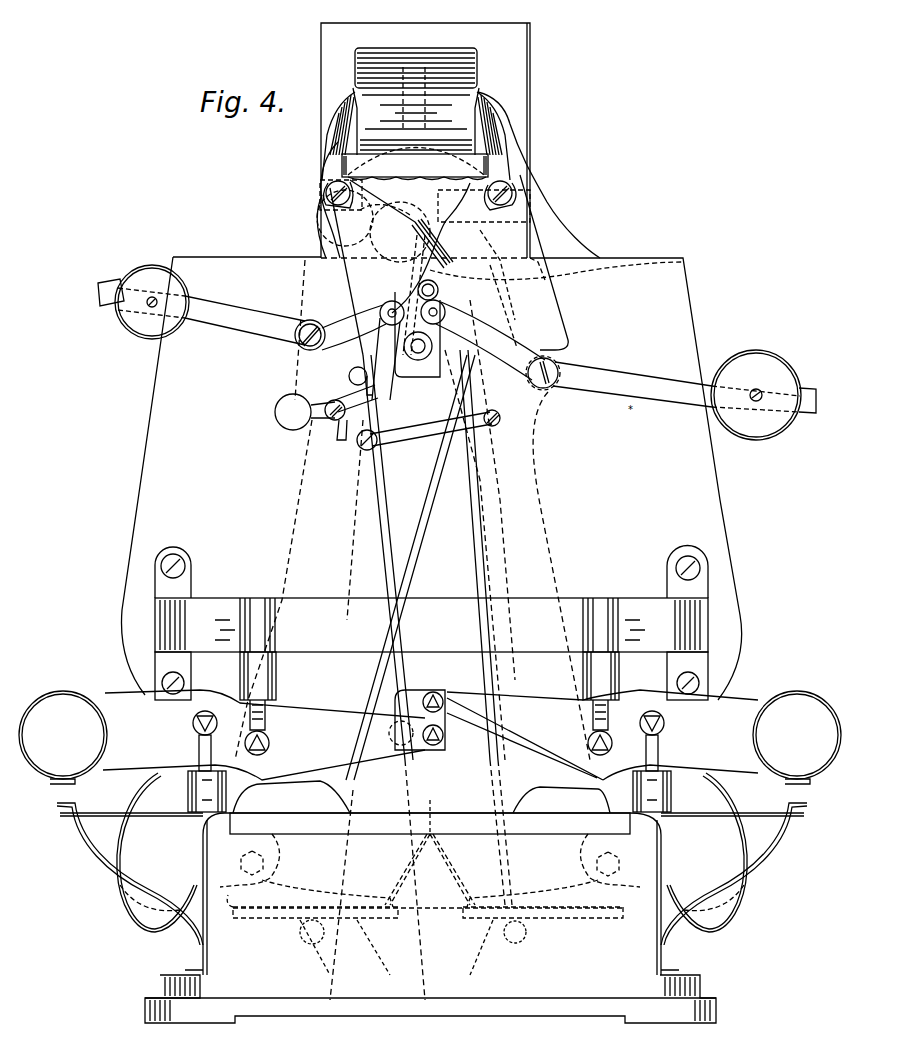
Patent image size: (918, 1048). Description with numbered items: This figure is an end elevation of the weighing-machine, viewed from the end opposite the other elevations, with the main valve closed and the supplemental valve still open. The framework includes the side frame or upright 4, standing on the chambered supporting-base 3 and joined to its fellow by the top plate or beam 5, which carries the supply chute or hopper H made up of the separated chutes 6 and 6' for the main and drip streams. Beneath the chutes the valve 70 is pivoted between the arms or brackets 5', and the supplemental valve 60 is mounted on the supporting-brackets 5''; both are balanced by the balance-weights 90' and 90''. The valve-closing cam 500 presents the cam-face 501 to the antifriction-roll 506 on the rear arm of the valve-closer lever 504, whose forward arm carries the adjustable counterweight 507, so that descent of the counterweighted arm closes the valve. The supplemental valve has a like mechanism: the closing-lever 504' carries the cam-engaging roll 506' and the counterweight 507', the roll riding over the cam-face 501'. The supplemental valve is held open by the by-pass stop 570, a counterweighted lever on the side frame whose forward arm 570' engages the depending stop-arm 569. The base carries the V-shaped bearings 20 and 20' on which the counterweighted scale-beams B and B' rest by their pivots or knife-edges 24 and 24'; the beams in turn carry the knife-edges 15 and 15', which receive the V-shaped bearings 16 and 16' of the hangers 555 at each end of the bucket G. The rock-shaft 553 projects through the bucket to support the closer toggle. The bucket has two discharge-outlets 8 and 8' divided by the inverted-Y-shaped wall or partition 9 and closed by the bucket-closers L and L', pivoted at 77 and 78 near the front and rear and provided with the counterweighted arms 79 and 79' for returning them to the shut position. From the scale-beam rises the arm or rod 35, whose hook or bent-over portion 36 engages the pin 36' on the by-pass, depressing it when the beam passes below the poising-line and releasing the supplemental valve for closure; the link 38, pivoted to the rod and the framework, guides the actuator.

The supply chute or hopper H is at (425, 140).
The balance-weight 90' is at (458, 101).
The arms or brackets 5' is at (516, 136).
The supporting-brackets 5'' is at (321, 136).
The top plate or beam 5 is at (446, 152).
The chute 6 is at (539, 175).
The chute 6' is at (311, 200).
The balance-weight 90'' is at (396, 195).
The supplemental valve 60 is at (330, 225).
The valve-closing cam 500 is at (355, 235).
The cam-face 501' is at (485, 265).
The valve 70 is at (572, 273).
The bucket G is at (431, 478).
The counterweight 507' is at (143, 314).
The closing-lever 504' is at (245, 326).
The stop-arm 569 is at (348, 296).
The rock-shaft 553 is at (378, 354).
The cam-engaging roll 506' is at (382, 329).
The antifriction-roll 506 is at (442, 328).
The cam-face 501 is at (490, 354).
The valve-closer lever 504 is at (663, 375).
The adjustable counterweight 507 is at (763, 409).
The side frame or upright 4 is at (540, 460).
The by-pass stop 570 is at (296, 397).
The forward arm 570' is at (372, 420).
The hook or bent-over portion 36 is at (346, 381).
The pin 36' is at (376, 398).
The link 38 is at (412, 437).
The arm or rod 35 is at (366, 520).
The hangers 555 is at (300, 610).
The scale-beam B' is at (222, 726).
The scale-beam B is at (644, 729).
The V-shaped bearing 16' is at (274, 691).
The pivot or knife-edge 15' is at (277, 743).
The V-shaped bearing 16 is at (586, 691).
The pivot or knife-edge 15 is at (585, 743).
The pivot or knife-edge 24' is at (191, 741).
The V-shaped bearing 20' is at (187, 791).
The pivot or knife-edge 24 is at (669, 741).
The V-shaped bearing 20 is at (671, 791).
The chambered supporting-base 3 is at (210, 948).
The inverted-Y-shaped wall or partition 9 is at (432, 815).
The pivot 78 is at (262, 862).
The pivot 77 is at (622, 862).
The bucket-closer L' is at (426, 935).
The discharge-outlet 8' is at (299, 941).
The bucket-closer L is at (543, 941).
The discharge-outlet 8 is at (543, 937).
The counterweighted arm 79' is at (130, 859).
The counterweighted arm 79 is at (734, 859).